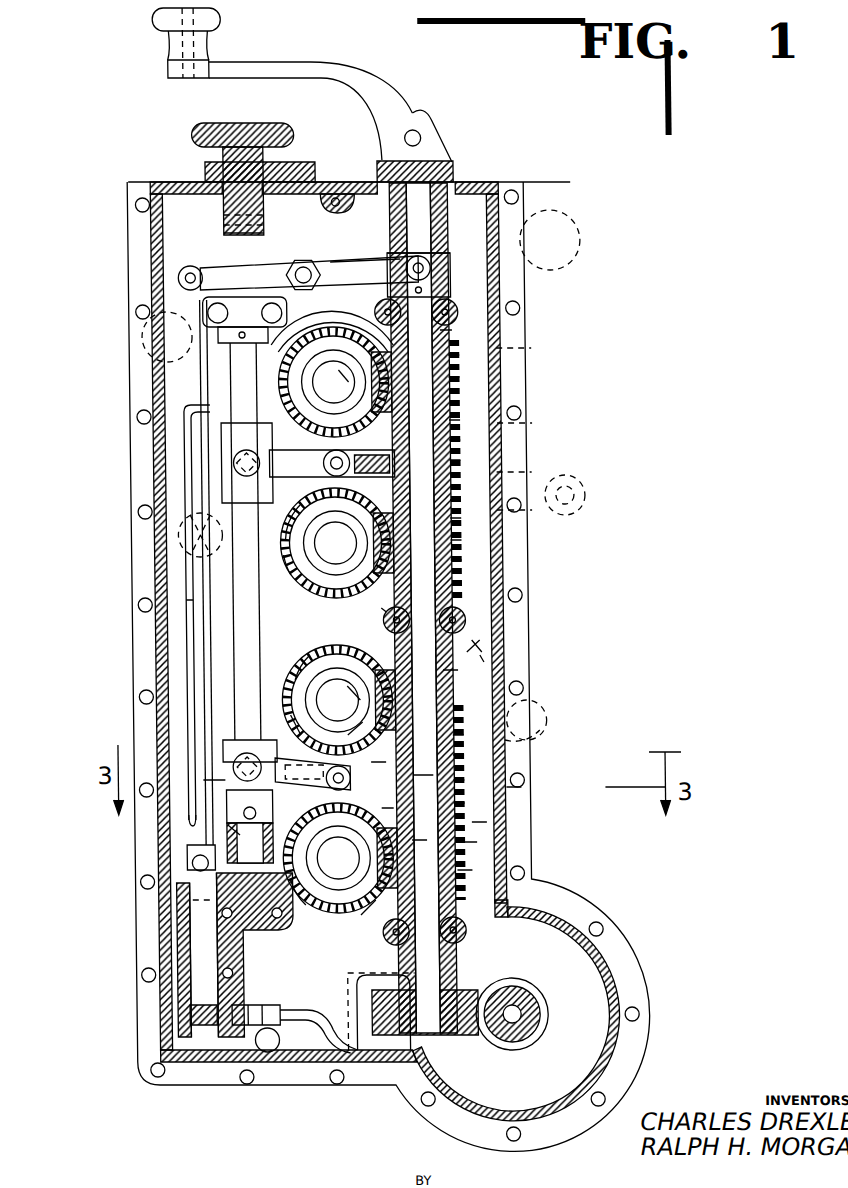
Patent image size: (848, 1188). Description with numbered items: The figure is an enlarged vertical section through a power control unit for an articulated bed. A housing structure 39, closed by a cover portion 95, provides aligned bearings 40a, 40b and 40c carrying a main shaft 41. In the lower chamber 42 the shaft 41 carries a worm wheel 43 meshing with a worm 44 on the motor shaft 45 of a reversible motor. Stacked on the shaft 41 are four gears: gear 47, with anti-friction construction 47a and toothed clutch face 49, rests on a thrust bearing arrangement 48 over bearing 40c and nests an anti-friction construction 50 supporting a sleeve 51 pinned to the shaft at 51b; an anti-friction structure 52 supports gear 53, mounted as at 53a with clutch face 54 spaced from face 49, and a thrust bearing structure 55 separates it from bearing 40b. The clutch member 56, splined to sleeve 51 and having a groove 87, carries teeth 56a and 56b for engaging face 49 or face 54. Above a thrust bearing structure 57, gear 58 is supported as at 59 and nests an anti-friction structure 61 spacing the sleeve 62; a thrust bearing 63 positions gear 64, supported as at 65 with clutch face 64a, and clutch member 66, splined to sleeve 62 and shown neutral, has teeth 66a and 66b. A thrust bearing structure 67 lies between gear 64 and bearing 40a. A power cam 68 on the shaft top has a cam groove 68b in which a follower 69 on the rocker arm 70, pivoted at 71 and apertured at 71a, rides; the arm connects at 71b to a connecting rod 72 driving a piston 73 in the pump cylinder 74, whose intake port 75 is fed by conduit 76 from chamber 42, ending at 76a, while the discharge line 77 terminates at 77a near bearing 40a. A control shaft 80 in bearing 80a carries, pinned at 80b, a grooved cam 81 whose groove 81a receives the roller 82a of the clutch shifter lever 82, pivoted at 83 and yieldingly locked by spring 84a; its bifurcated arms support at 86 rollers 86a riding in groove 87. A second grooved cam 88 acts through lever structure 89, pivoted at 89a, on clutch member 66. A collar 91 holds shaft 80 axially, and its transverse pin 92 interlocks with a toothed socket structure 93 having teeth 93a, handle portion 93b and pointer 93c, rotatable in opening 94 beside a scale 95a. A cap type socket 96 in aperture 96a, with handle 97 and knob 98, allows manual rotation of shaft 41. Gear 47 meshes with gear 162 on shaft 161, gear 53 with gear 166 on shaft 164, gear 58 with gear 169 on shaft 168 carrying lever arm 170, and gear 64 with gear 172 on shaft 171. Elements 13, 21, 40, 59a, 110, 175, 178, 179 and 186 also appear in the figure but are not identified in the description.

The dashed pivot circle 13 is at (199, 556).
The dashed opening 21 is at (535, 222).
The housing structure 39 is at (478, 182).
The shaft right section 40 is at (445, 478).
The bearing 40a is at (454, 314).
The bearing 40b is at (452, 612).
The bearing 40c is at (456, 930).
The shaft 41 is at (406, 243).
The chamber 42 is at (362, 1062).
The worm wheel 43 is at (450, 1008).
The worm 44 is at (537, 1010).
The motor shaft 45 is at (503, 1022).
The gear 47 is at (462, 870).
The anti-friction construction 47a is at (468, 842).
The thrust bearing arrangement 48 is at (360, 925).
The toothed clutch face 49 is at (478, 823).
The anti-friction construction 50 is at (379, 809).
The sleeve 51 is at (455, 735).
The pin connection 51b is at (425, 766).
The anti-friction structure 52 is at (348, 733).
The gear 53 is at (500, 700).
The gear mounting 53a is at (450, 670).
The clutch face 54 is at (346, 684).
The thrust bearing structure 55 is at (374, 650).
The clutch member 56 is at (455, 755).
The clutch teeth 56a is at (455, 803).
The clutch teeth 56b is at (383, 755).
The thrust bearing structure 57 is at (376, 605).
The gear 58 is at (455, 580).
The rotatable support 59 is at (455, 560).
The lever block 59a is at (373, 477).
The anti-friction structure 61 is at (455, 540).
The sleeve 62 is at (455, 460).
The thrust bearing 63 is at (455, 420).
The gear 64 is at (455, 378).
The clutch face 64a is at (455, 440).
The rotatable support 65 is at (455, 358).
The clutch member 66 is at (455, 500).
The clutch teeth 66a is at (455, 518).
The clutch teeth 66b is at (331, 463).
The thrust bearing structure 67 is at (448, 336).
The power cam 68 is at (447, 290).
The cam groove 68b is at (466, 214).
The follower 69 is at (402, 268).
The rocker arm 70 is at (365, 275).
The pivot 71 is at (308, 262).
The aperture 71a is at (242, 280).
The pivotal connection 71b is at (196, 276).
The connecting rod 72 is at (218, 830).
The piston 73 is at (176, 945).
The pump cylinder 74 is at (172, 1008).
The intake port 75 is at (232, 1030).
The conduit 76 is at (311, 1032).
The conduit termination 76a is at (532, 1118).
The discharge line 77 is at (188, 630).
The discharge line termination 77a is at (333, 367).
The shaft 80 is at (236, 667).
The bearing 80a is at (190, 862).
The pin connection 80b is at (226, 777).
The grooved cam 81 is at (228, 742).
The cam groove 81a is at (250, 843).
The clutch shifter lever 82 is at (343, 780).
The roller 82a is at (224, 762).
The pivot 83 is at (267, 800).
The spring 84a is at (285, 710).
The pivot 86 is at (455, 780).
The roller 86a is at (422, 833).
The groove 87 is at (512, 787).
The grooved cam 88 is at (229, 460).
The lever structure 89 is at (257, 398).
The pivot 89a is at (284, 548).
The collar 91 is at (221, 345).
The transverse pin 92 is at (220, 226).
The toothed socket structure 93 is at (262, 190).
The teeth 93a is at (262, 231).
The handle portion 93b is at (285, 112).
The pointer portion 93c is at (292, 164).
The opening 94 is at (190, 187).
The cover portion 95 is at (147, 183).
The scale 95a is at (316, 182).
The cap type socket 96 is at (444, 133).
The aperture 96a is at (451, 177).
The handle 97 is at (337, 70).
The knob 98 is at (220, 22).
The plug 110 is at (257, 1052).
The shaft 161 is at (340, 858).
The gear 162 is at (308, 918).
The shaft 164 is at (337, 700).
The gear 166 is at (290, 672).
The shaft 168 is at (337, 543).
The gear 169 is at (306, 588).
The lever arm 170 is at (482, 636).
The shaft 171 is at (335, 382).
The gear 172 is at (326, 345).
The rod 175 is at (194, 432).
The dashed circle 178 is at (197, 305).
The pivot 179 is at (553, 505).
The arc 186 is at (518, 733).